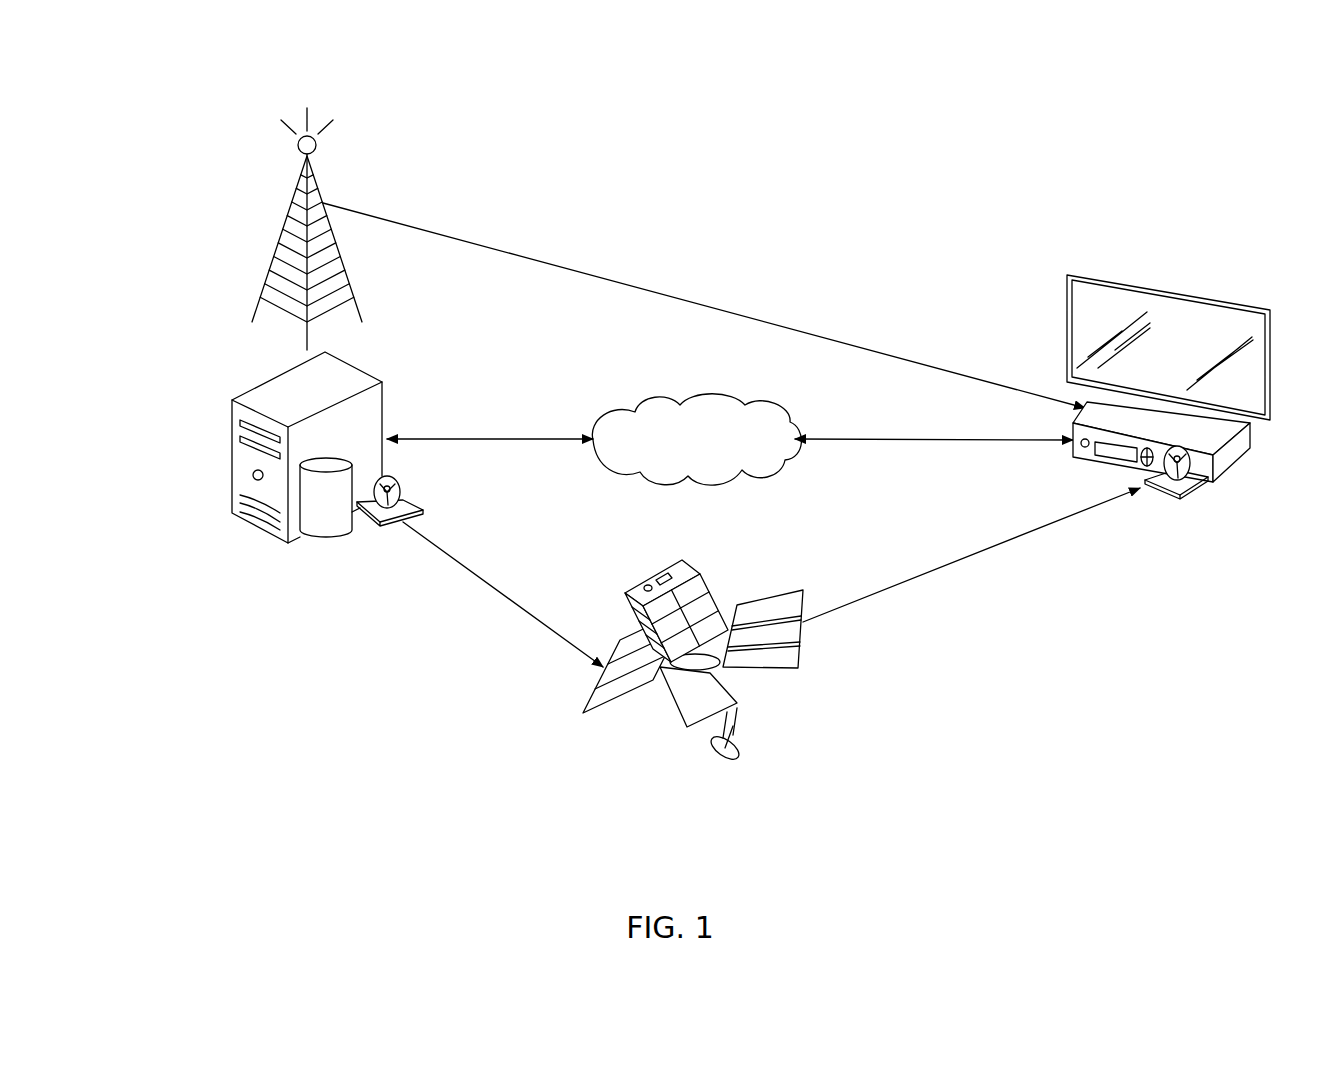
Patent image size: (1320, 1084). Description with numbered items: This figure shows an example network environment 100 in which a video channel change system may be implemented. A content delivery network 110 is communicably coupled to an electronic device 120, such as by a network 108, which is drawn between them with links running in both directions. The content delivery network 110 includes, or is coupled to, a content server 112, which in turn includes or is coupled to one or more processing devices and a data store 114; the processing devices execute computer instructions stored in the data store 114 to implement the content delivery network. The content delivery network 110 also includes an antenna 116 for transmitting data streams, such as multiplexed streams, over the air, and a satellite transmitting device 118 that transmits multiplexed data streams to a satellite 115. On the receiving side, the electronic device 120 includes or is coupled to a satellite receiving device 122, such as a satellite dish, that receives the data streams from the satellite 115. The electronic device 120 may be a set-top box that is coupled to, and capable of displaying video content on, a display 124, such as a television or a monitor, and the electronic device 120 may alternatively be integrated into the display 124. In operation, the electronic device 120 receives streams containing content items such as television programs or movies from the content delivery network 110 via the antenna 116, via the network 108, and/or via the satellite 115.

The network environment 100 is at (1200, 106).
The network 108 is at (727, 477).
The content delivery network 110 is at (155, 573).
The content server 112 is at (230, 442).
The data store 114 is at (333, 532).
The satellite 115 is at (745, 692).
The antenna 116 is at (275, 243).
The satellite transmitting device 118 is at (403, 488).
The electronic device 120 is at (1230, 448).
The satellite receiving device 122 is at (1162, 493).
The display 124 is at (1195, 293).